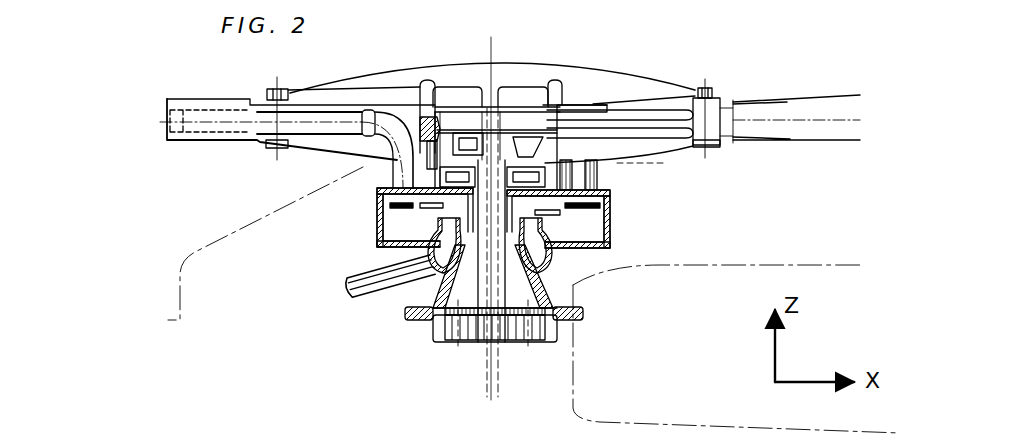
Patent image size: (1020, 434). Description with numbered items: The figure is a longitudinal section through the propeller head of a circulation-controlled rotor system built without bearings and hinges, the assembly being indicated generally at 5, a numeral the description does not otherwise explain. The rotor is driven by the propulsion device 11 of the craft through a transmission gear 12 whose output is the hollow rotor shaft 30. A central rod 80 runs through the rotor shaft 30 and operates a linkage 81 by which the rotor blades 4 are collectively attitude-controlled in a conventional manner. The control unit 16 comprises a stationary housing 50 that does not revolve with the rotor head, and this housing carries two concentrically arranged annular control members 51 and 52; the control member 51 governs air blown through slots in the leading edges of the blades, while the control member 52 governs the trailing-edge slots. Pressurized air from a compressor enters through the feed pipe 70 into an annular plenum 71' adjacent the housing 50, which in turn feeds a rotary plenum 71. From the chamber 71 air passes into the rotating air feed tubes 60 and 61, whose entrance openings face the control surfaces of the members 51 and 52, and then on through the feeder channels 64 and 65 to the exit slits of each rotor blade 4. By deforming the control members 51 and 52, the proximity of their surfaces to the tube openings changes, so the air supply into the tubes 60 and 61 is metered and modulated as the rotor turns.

The rotor blade 4 is at (210, 110).
The rotor hub assembly 5 is at (504, 49).
The propulsion device 11 is at (772, 280).
The transmission gear 12 is at (403, 346).
The control unit 16 is at (327, 258).
The rotor shaft 30 is at (468, 298).
The stationary housing 50 is at (435, 293).
The control member 51 is at (402, 208).
The control member 52 is at (393, 248).
The air feed tube 60 is at (425, 155).
The air feed tube 61 is at (377, 113).
The air feeder channel 64 is at (260, 140).
The air feeder channel 65 is at (432, 120).
The feed pipe 70 is at (348, 295).
The rotary plenum 71 is at (535, 213).
The annular plenum 71' is at (539, 271).
The central rod 80 is at (487, 367).
The linkage 81 is at (392, 100).